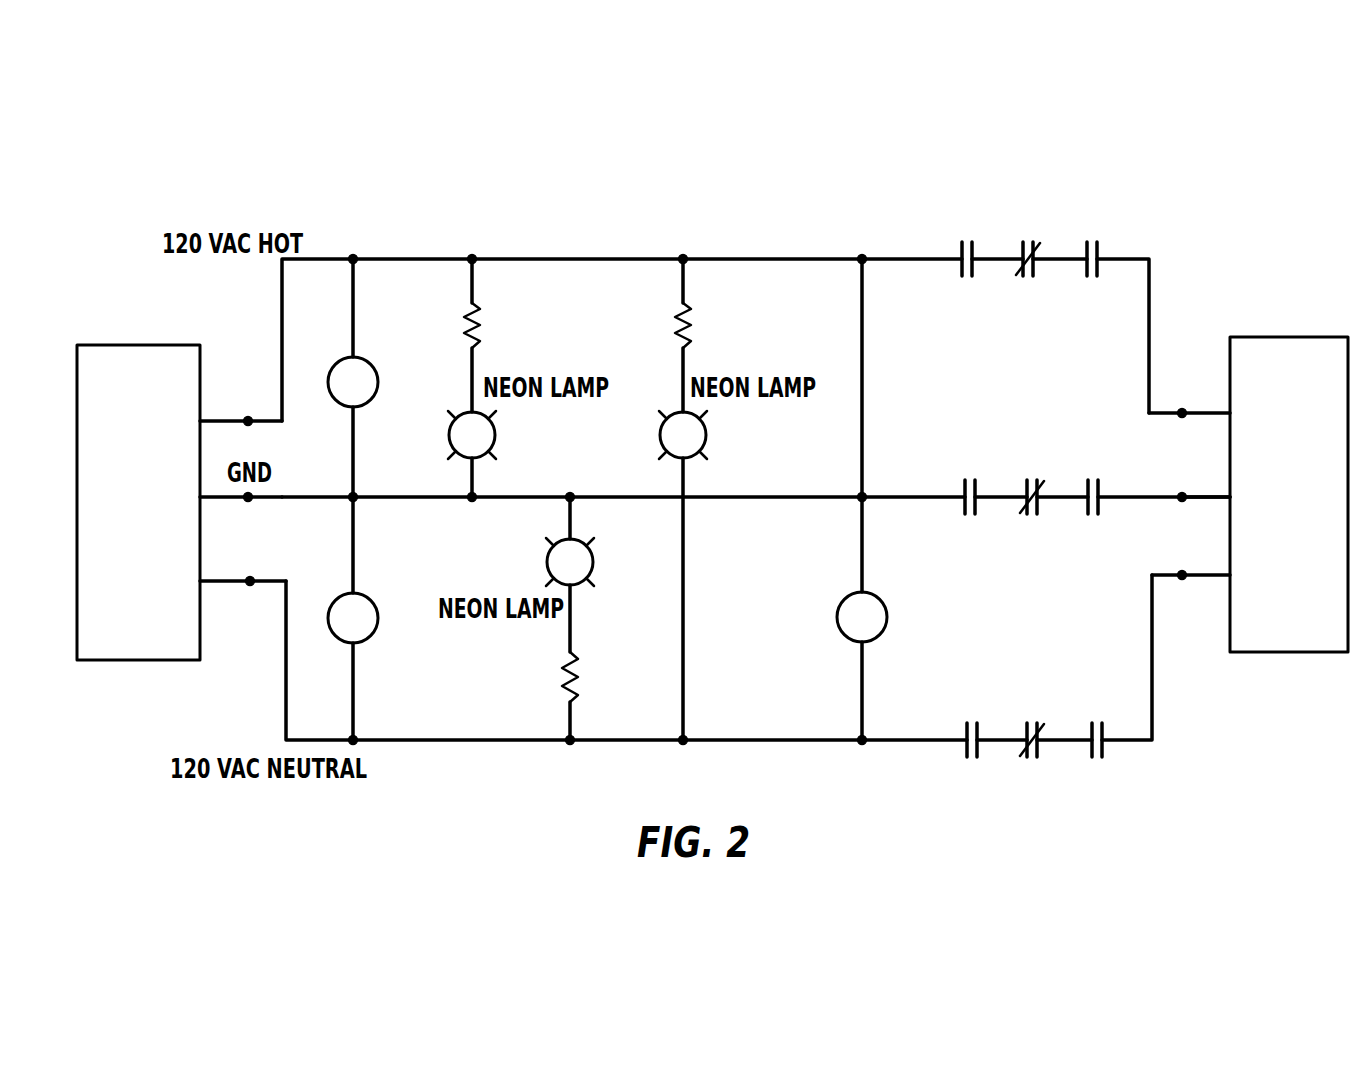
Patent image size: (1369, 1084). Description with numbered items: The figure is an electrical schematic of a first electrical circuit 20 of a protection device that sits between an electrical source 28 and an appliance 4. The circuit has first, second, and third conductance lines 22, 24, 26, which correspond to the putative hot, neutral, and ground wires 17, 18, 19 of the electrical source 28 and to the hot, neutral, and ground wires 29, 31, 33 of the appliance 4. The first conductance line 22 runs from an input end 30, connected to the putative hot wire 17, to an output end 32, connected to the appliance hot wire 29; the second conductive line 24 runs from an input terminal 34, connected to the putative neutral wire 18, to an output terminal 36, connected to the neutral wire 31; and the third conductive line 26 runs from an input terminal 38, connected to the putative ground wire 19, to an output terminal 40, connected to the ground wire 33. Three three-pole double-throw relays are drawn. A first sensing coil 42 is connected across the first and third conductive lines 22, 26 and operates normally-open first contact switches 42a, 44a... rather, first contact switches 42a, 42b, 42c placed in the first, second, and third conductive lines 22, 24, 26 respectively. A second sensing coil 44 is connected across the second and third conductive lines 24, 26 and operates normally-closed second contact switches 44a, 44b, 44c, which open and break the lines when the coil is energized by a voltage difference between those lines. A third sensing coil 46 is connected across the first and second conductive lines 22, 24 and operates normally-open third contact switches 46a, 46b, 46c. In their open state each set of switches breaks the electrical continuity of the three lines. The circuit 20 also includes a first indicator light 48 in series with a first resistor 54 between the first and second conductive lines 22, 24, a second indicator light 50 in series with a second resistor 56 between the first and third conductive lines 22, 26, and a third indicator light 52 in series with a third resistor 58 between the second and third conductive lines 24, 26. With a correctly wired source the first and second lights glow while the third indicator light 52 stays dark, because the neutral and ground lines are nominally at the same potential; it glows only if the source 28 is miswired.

The appliance 4 is at (1280, 337).
The putative hot wire of the electrical source 17 is at (220, 423).
The putative neutral wire of the electrical source 18 is at (230, 586).
The putative ground wire of the electrical source 19 is at (222, 501).
The electrical circuit 20 is at (913, 180).
The first conductance line 22 is at (568, 259).
The second conductive line 24 is at (738, 740).
The third conductive line 26 is at (740, 498).
The electrical source 28 is at (137, 345).
The hot wire of the appliance 29 is at (1197, 415).
The input end 30 is at (248, 421).
The neutral wire of the appliance 31 is at (1205, 578).
The output end 32 is at (1178, 412).
The ground wire of the appliance 33 is at (1200, 497).
The input terminal 34 is at (250, 581).
The output terminal 36 is at (1180, 574).
The input terminal 38 is at (248, 497).
The output terminal 40 is at (1182, 494).
The first sensing coil 42 is at (368, 365).
The second sensing coil 44 is at (374, 637).
The third sensing coil 46 is at (877, 599).
The first indicator light 48 is at (706, 435).
The second indicator light 50 is at (495, 435).
The third indicator light 52 is at (596, 561).
The first resistor 54 is at (690, 308).
The second resistor 56 is at (480, 308).
The third resistor 58 is at (578, 661).
The first contact switch 42a is at (978, 247).
The second contact switch 44a is at (1045, 247).
The third contact switch 46a is at (1114, 247).
The first contact switch 42b is at (960, 735).
The second contact switch 44b is at (1022, 735).
The third contact switch 46b is at (1088, 735).
The first contact switch 42c is at (968, 482).
The second contact switch 44c is at (1032, 482).
The third contact switch 46c is at (1095, 482).